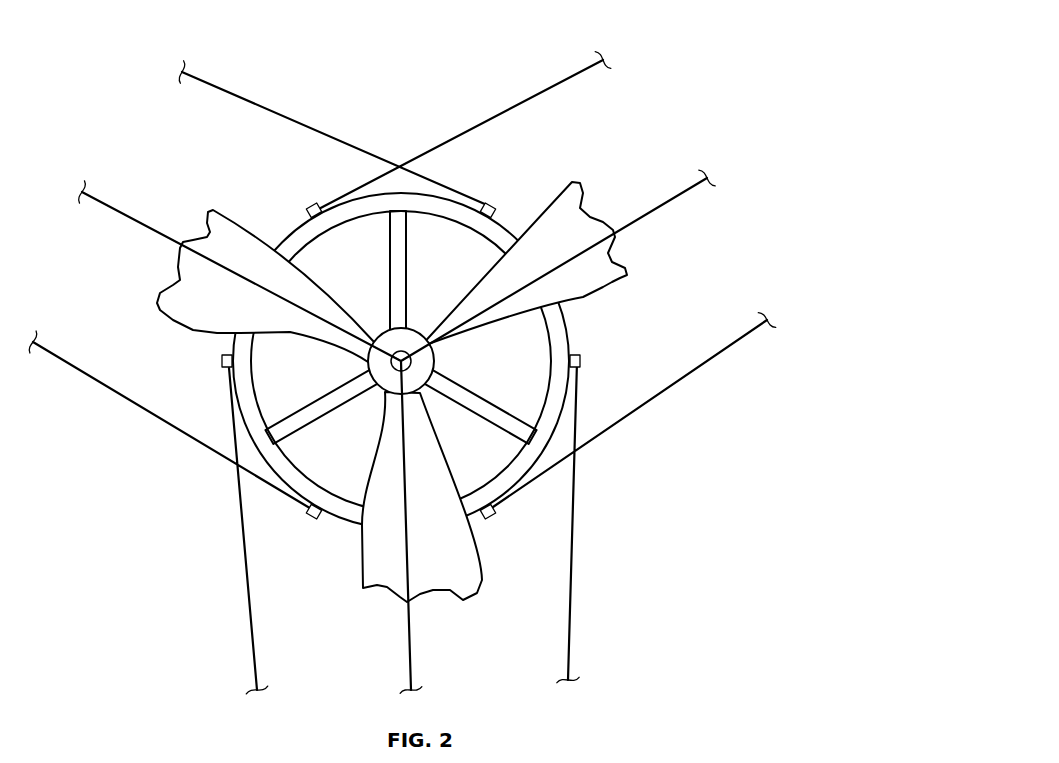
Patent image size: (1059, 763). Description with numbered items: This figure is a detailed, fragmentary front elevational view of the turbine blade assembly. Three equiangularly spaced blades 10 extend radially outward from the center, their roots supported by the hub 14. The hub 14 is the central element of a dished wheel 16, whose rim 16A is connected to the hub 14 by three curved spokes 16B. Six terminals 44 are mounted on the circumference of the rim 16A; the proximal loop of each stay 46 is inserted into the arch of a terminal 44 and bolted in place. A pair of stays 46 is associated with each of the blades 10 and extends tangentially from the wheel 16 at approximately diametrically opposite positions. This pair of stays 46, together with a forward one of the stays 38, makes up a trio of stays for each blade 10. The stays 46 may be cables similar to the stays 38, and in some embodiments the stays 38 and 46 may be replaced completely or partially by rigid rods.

The blade 10 is at (572, 182).
The hub 14 is at (413, 337).
The dished wheel 16 is at (468, 361).
The rim 16A is at (532, 457).
The curved spoke 16B is at (399, 217).
The stay 38 is at (112, 205).
The terminal 44 is at (489, 199).
The stay 46 is at (240, 97).